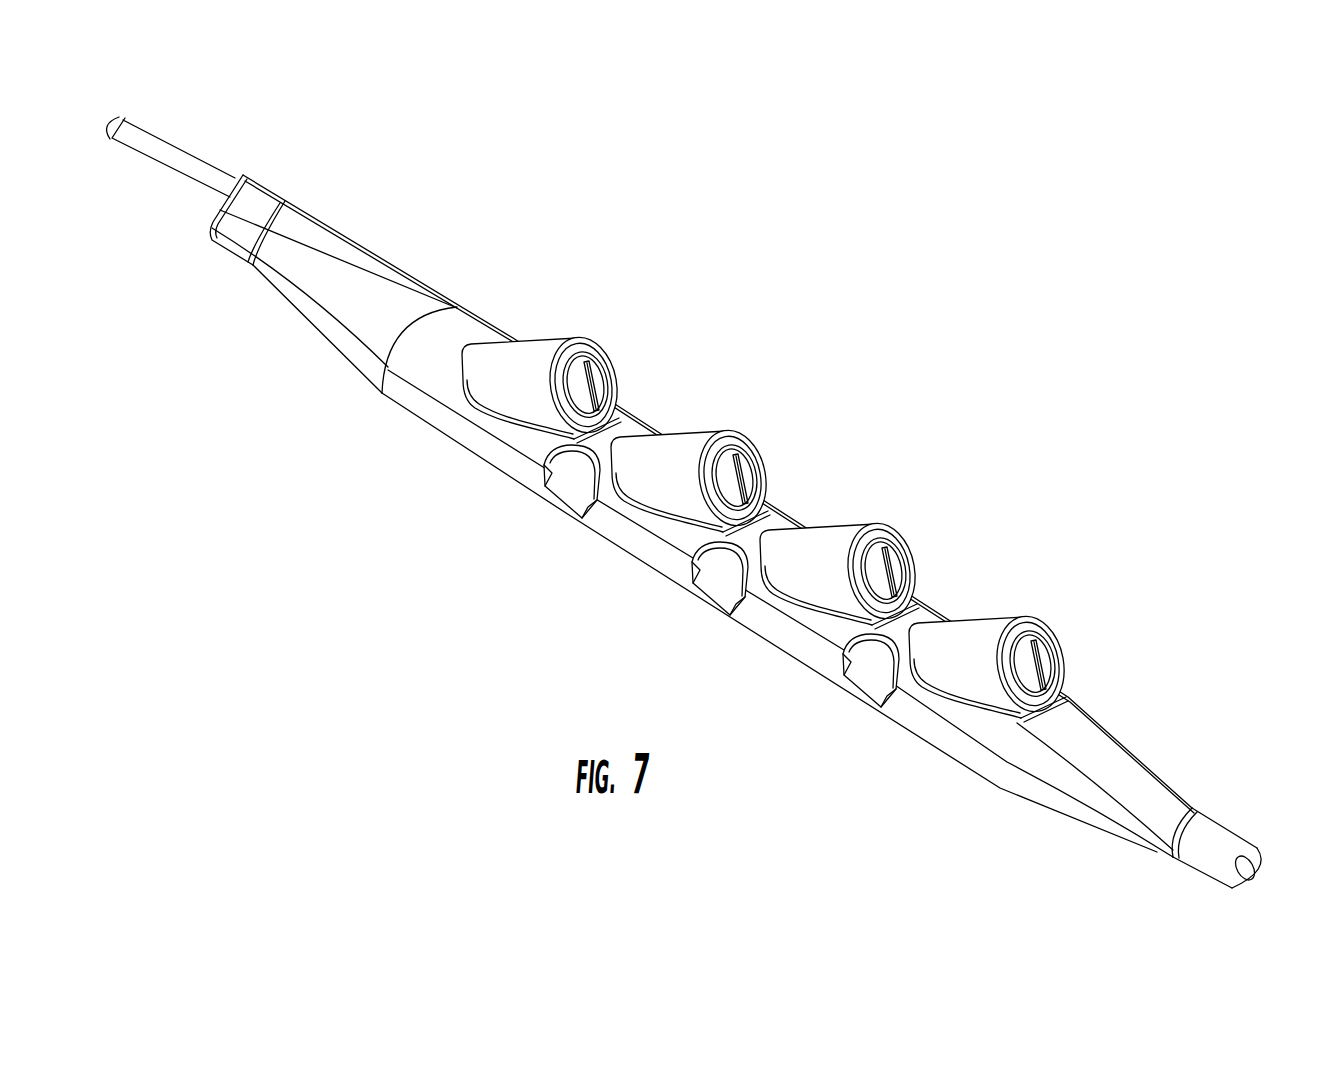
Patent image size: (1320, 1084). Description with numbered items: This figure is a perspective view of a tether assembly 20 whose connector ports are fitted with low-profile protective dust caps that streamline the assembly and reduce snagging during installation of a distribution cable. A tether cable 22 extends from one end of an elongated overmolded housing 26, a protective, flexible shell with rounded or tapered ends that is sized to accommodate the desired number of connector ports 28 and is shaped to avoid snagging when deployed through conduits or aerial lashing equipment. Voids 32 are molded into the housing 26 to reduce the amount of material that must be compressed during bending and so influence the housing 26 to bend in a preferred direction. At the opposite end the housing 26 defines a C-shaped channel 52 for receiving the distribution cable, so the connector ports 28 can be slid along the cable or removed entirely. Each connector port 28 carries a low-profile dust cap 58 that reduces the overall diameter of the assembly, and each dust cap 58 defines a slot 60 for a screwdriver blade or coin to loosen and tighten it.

The tether assembly 20 is at (808, 284).
The tether cable 22 is at (130, 113).
The overmolded housing 26 is at (338, 248).
The connector port 28 is at (575, 352).
The void 32 is at (566, 490).
The C-shaped channel 52 is at (1243, 871).
The low-profile dust cap 58 is at (896, 562).
The slot 60 is at (747, 475).